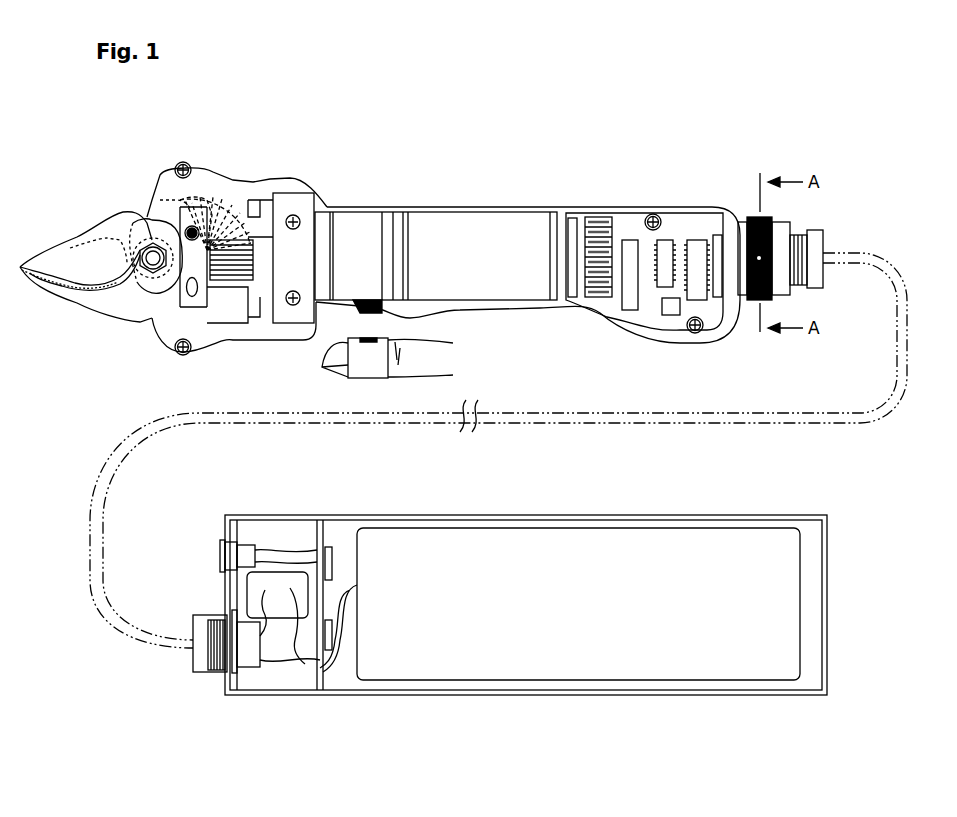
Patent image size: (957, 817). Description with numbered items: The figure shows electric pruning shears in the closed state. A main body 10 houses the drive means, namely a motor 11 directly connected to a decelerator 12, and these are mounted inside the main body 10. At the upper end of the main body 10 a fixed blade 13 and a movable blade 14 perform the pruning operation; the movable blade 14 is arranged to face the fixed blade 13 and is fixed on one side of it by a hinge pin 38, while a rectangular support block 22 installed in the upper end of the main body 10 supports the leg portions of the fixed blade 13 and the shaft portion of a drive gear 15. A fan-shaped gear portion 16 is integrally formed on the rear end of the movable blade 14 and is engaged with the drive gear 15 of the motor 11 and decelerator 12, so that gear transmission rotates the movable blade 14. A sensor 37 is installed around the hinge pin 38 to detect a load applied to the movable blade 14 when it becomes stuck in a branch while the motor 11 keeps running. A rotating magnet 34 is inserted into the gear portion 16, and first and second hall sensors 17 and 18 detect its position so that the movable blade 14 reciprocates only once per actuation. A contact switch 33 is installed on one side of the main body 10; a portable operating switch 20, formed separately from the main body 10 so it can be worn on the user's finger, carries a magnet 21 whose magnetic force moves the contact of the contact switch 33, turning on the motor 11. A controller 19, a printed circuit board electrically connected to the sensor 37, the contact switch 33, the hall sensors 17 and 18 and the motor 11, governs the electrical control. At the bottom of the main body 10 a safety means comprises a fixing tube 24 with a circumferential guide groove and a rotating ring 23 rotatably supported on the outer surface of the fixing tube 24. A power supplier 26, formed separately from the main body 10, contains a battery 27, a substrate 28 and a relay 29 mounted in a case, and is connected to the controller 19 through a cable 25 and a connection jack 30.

The main body 10 is at (446, 204).
The motor 11 is at (501, 210).
The decelerator 12 is at (353, 210).
The fixed blade 13 is at (80, 303).
The movable blade 14 is at (60, 247).
The drive gear 15 is at (253, 240).
The gear portion 16 is at (207, 170).
The first hall sensor 17 is at (190, 228).
The second hall sensor 18 is at (198, 297).
The controller 19 is at (619, 212).
The portable operating switch 20 is at (357, 377).
The magnet 21 is at (380, 340).
The support block 22 is at (290, 192).
The rotating ring 23 is at (749, 302).
The fixing tube 24 is at (743, 218).
The cable 25 is at (582, 413).
The power supplier 26 is at (583, 515).
The battery 27 is at (510, 528).
The substrate 28 is at (330, 542).
The relay 29 is at (250, 588).
The connection jack 30 is at (252, 669).
The contact switch 33 is at (357, 313).
The rotating magnet 34 is at (173, 202).
The sensor 37 is at (151, 266).
The hinge pin 38 is at (160, 270).